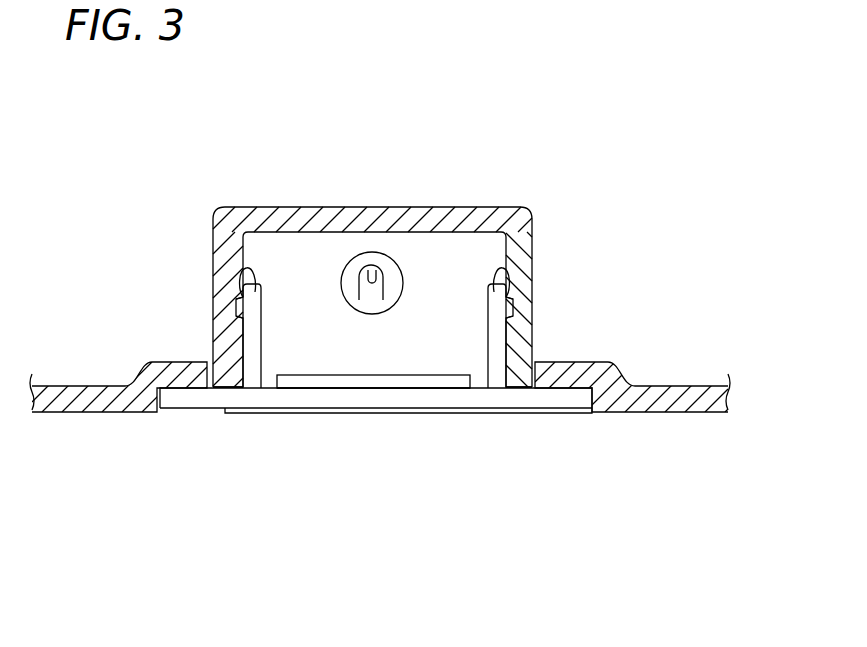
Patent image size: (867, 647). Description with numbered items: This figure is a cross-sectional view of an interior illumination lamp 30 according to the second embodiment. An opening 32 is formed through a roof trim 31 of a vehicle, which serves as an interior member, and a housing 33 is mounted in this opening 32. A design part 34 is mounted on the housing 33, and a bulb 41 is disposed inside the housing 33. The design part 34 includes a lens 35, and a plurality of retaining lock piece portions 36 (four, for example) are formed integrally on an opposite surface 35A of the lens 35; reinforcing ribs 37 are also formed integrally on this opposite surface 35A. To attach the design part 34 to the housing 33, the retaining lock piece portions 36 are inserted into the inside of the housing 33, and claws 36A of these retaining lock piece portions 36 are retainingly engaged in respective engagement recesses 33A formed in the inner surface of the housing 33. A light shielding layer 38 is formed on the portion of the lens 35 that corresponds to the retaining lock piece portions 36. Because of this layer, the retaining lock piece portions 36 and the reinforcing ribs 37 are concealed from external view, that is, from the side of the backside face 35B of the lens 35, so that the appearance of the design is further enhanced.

The interior illumination lamp 30 is at (247, 169).
The roof trim 31 is at (668, 413).
The opening 32 is at (513, 386).
The housing 33 is at (448, 208).
The engagement recesses 33A is at (253, 287).
The design part 34 is at (372, 434).
The lens 35 is at (375, 408).
The opposite surface 35A is at (338, 375).
The backside face 35B is at (225, 410).
The retaining lock piece portions 36 is at (263, 317).
The claws 36A is at (238, 292).
The reinforcing ribs 37 is at (433, 375).
The light shielding layer 38 is at (257, 413).
The bulb 41 is at (372, 252).